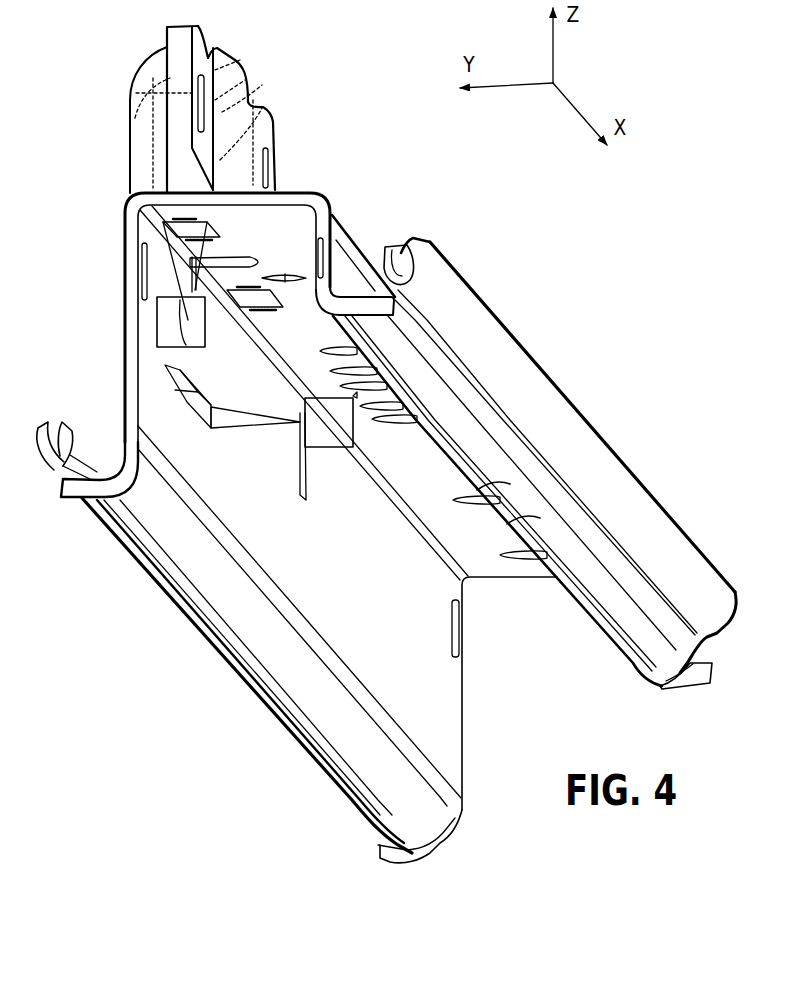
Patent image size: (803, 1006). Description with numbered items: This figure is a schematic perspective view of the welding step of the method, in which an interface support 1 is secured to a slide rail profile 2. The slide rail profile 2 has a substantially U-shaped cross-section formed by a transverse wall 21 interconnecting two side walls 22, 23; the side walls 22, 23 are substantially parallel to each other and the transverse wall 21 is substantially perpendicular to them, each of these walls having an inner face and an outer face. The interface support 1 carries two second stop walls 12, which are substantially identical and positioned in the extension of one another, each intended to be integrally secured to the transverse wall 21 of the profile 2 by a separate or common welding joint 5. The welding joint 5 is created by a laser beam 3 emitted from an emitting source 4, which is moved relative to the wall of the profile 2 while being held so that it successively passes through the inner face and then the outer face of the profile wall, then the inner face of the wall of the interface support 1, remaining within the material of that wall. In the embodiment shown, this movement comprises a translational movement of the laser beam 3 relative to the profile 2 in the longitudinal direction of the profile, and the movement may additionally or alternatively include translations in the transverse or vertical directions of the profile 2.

The interface support 1 is at (297, 58).
The slide rail profile 2 is at (581, 362).
The laser beam 3 is at (181, 253).
The emitting source 4 is at (181, 323).
The welding joint 5 is at (207, 226).
The second stop wall 12 is at (190, 110).
The transverse wall 21 is at (301, 192).
The side wall 22 is at (133, 378).
The side wall 23 is at (324, 219).